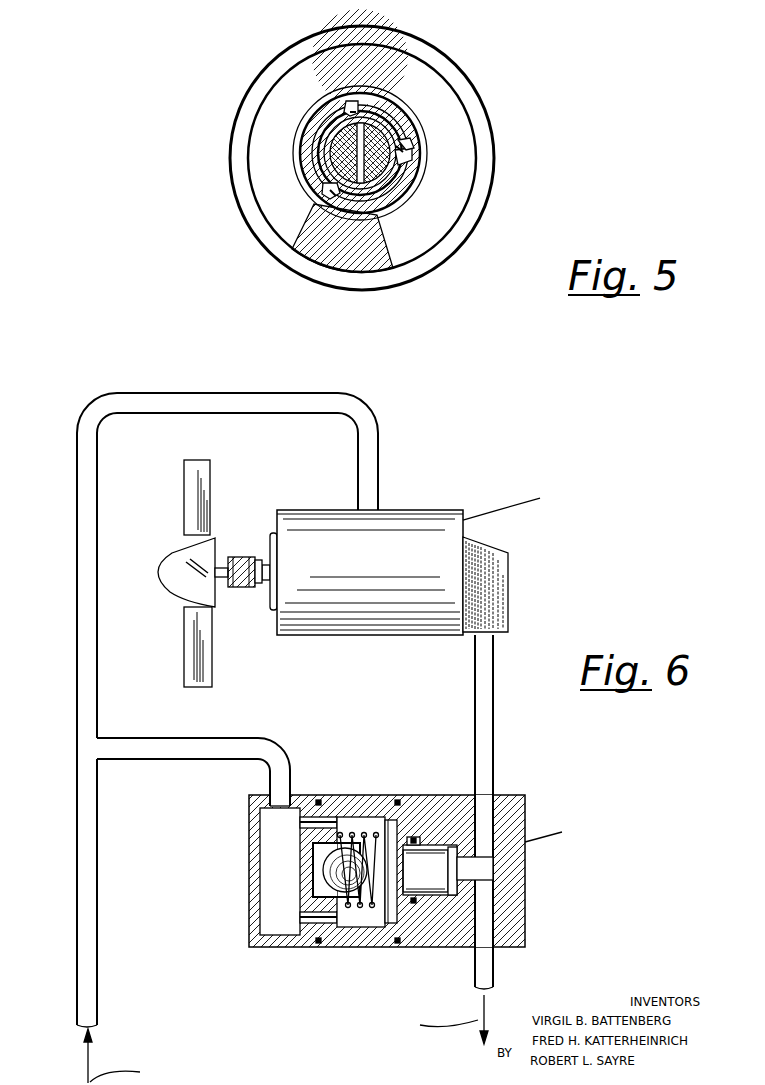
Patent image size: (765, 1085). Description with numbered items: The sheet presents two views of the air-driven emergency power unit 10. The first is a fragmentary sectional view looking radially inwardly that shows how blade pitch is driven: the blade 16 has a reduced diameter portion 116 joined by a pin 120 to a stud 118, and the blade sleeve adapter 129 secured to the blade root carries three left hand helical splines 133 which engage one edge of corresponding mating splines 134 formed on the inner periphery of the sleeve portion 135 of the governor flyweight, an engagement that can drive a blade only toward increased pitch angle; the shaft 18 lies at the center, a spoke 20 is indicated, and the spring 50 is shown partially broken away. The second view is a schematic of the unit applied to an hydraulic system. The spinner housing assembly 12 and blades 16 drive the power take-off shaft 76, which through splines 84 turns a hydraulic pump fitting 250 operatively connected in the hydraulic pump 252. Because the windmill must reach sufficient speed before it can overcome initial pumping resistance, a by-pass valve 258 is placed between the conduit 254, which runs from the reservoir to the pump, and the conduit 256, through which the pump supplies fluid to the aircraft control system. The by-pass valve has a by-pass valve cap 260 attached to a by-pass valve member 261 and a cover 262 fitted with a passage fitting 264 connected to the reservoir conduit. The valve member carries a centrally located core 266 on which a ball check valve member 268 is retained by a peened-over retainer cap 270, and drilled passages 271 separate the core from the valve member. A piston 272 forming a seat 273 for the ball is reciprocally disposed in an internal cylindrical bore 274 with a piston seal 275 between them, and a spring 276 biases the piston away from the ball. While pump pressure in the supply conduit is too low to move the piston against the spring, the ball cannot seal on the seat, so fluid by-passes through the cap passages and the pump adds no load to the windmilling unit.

In FIG. 5, the fan assembly 10 is at (473, 82).
In FIG. 6, the fan assembly 10 is at (199, 568).
In FIG. 6, the spinner housing assembly 12 is at (180, 582).
In FIG. 6, the blade 16 is at (205, 472).
In FIG. 5, the shaft 18 is at (363, 120).
In FIG. 5, the spoke 20 is at (403, 202).
In FIG. 5, the spring 50 is at (450, 192).
In FIG. 6, the shaft 76 is at (222, 566).
In FIG. 6, the splines 84 is at (240, 568).
In FIG. 5, the reduced diameter portion 116 is at (328, 133).
In FIG. 5, the stud 118 is at (343, 152).
In FIG. 5, the pin 120 is at (355, 160).
In FIG. 5, the blade sleeve adapter 129 is at (395, 140).
In FIG. 5, the helical splines 133 is at (335, 104).
In FIG. 5, the mating splines 134 is at (349, 104).
In FIG. 5, the sleeve portion 135 is at (418, 150).
In FIG. 6, the hydraulic pump fitting 250 is at (258, 588).
In FIG. 6, the hydraulic pump 252 is at (412, 520).
In FIG. 6, the conduit 254 is at (77, 690).
In FIG. 6, the conduit 256 is at (473, 684).
In FIG. 6, the by-pass valve 258 is at (258, 948).
In FIG. 6, the by-pass valve cap 260 is at (409, 853).
In FIG. 6, the by-pass valve member 261 is at (330, 796).
In FIG. 6, the cover 262 is at (298, 795).
In FIG. 6, the passage fitting 264 is at (200, 752).
In FIG. 6, the core 266 is at (300, 893).
In FIG. 6, the ball check valve member 268 is at (337, 866).
In FIG. 6, the retainer cap 270 is at (360, 917).
In FIG. 6, the passages 271 is at (318, 915).
In FIG. 6, the piston 272 is at (388, 830).
In FIG. 6, the seat 273 is at (430, 870).
In FIG. 6, the internal cylindrical bore 274 is at (452, 857).
In FIG. 6, the piston seal 275 is at (412, 838).
In FIG. 6, the spring 276 is at (395, 908).